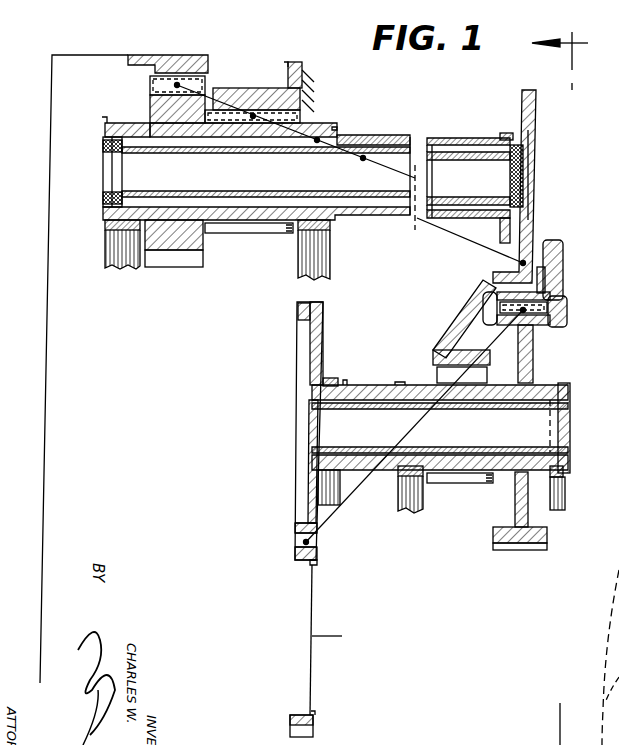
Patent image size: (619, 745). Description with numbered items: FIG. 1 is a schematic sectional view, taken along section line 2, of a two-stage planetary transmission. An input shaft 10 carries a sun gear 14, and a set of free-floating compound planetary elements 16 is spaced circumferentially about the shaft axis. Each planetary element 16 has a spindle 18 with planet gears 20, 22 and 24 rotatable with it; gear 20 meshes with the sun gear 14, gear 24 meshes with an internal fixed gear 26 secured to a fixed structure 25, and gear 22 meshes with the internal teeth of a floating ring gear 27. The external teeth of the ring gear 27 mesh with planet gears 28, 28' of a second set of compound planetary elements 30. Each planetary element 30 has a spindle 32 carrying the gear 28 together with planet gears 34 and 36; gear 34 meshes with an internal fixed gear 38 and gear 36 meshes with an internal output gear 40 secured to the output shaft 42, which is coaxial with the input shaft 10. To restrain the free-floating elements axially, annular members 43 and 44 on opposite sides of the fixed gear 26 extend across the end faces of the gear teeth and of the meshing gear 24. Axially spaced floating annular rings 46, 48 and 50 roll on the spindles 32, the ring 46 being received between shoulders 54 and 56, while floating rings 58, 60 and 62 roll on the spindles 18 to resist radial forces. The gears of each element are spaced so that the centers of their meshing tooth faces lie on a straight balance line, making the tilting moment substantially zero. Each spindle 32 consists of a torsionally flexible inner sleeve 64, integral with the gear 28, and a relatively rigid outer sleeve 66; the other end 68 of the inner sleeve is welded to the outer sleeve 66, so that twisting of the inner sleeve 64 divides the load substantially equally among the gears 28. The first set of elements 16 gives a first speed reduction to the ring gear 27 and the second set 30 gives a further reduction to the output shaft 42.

The section line 2 is at (560, 50).
The input shaft 10 is at (330, 636).
The sun gear 14 is at (313, 588).
The free-floating compound planetary element 16 is at (292, 412).
The spindle 18 is at (383, 386).
The planet gear 20 is at (308, 344).
The planet gear 22 is at (483, 485).
The planet gear 24 is at (533, 360).
The fixed structure 25 is at (565, 265).
The internal fixed gear 26 is at (563, 288).
The floating ring gear 27 is at (453, 325).
The planet gear 28 is at (535, 241).
The planet gear 28' is at (600, 539).
The compound planetary element 30 is at (542, 152).
The spindle 32 is at (438, 138).
The planet gear 34 is at (262, 234).
The planet gear 36 is at (148, 100).
The internal fixed gear 38 is at (262, 90).
The internal output gear 40 is at (189, 56).
The output shaft 42 is at (32, 622).
The annular member 43 is at (557, 323).
The annular member 44 is at (487, 305).
The floating annular ring 46 is at (107, 240).
The floating annular ring 48 is at (333, 252).
The floating annular ring 50 is at (502, 132).
The shoulder 54 is at (100, 118).
The shoulder 56 is at (137, 120).
The floating ring 58 is at (335, 380).
The floating ring 60 is at (425, 505).
The floating ring 62 is at (568, 493).
The inner sleeve 64 is at (367, 147).
The outer sleeve 66 is at (400, 135).
The end of inner sleeve 68 is at (103, 150).